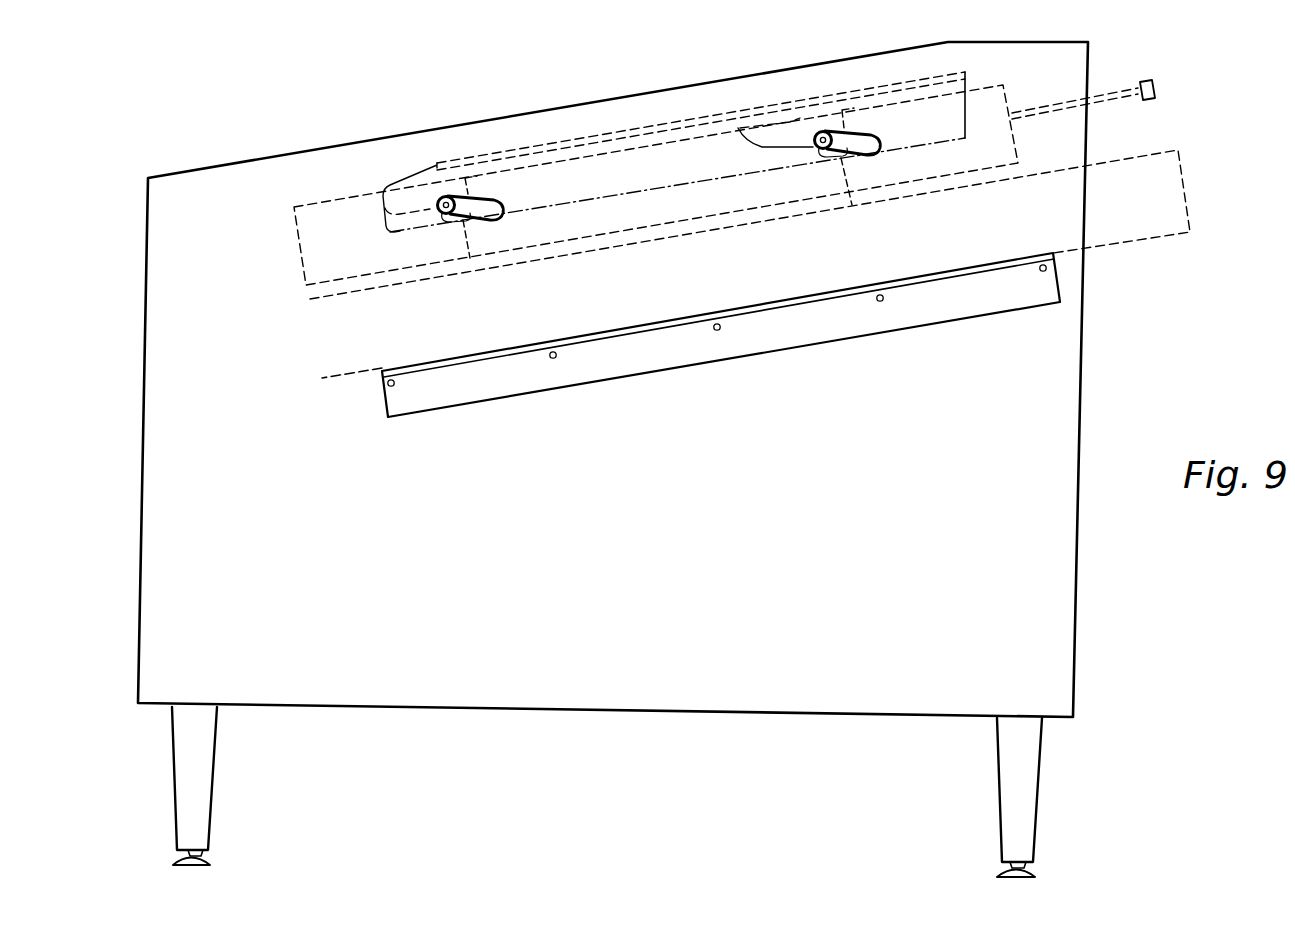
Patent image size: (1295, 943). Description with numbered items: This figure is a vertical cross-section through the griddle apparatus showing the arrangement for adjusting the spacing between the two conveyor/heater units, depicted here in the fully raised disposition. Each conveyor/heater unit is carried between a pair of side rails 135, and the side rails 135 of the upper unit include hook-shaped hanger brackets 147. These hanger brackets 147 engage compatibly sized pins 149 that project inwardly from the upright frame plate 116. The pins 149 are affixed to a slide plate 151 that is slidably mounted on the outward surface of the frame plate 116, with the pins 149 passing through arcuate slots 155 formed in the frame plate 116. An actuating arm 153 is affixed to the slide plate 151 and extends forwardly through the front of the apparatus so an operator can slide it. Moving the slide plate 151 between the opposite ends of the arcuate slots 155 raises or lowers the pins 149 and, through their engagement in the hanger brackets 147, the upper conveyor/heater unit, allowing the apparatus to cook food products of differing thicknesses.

The upright frame plate 116 is at (632, 609).
The side rail 135 is at (317, 257).
The hook-shaped hanger bracket 147 is at (470, 258).
The pin 149 is at (441, 213).
The slide plate 151 is at (652, 127).
The actuating arm 153 is at (1158, 91).
The arcuate slot 155 is at (505, 202).